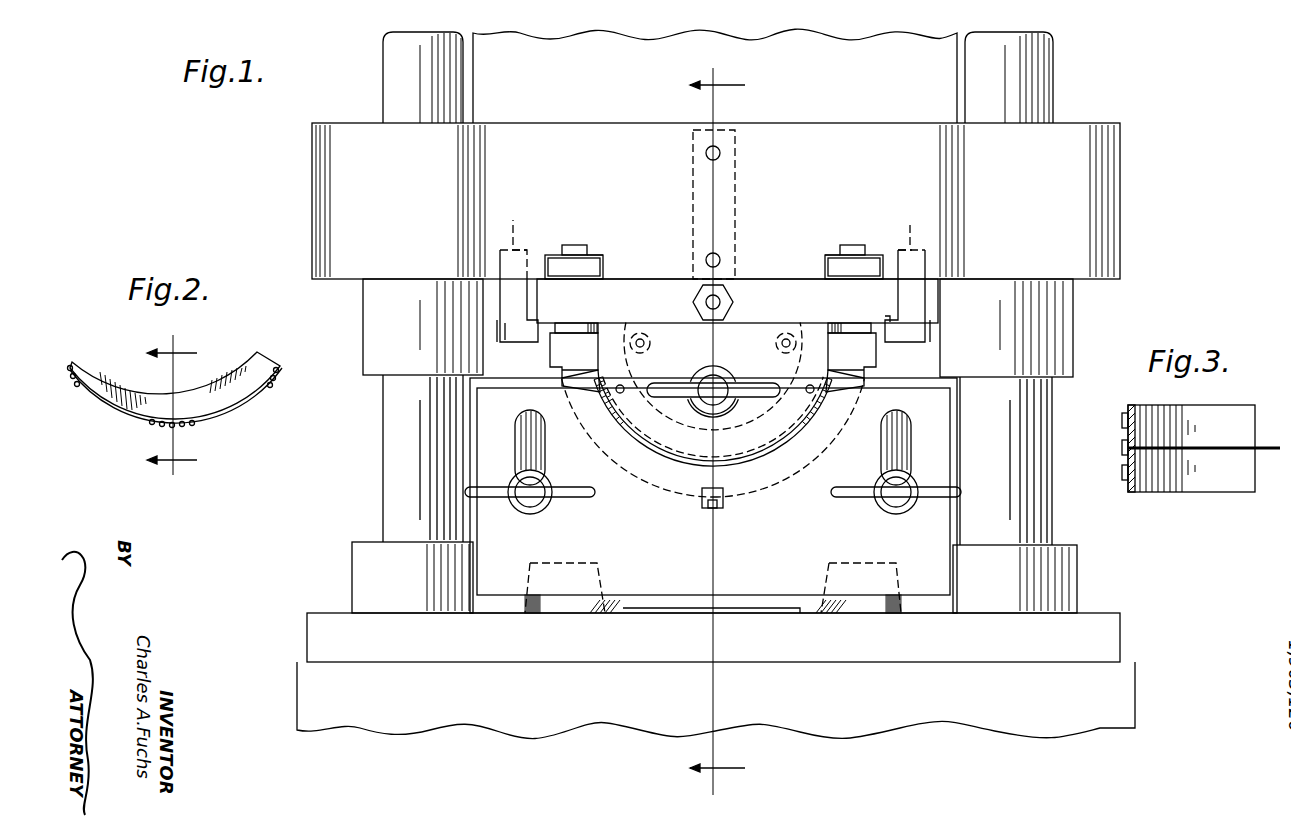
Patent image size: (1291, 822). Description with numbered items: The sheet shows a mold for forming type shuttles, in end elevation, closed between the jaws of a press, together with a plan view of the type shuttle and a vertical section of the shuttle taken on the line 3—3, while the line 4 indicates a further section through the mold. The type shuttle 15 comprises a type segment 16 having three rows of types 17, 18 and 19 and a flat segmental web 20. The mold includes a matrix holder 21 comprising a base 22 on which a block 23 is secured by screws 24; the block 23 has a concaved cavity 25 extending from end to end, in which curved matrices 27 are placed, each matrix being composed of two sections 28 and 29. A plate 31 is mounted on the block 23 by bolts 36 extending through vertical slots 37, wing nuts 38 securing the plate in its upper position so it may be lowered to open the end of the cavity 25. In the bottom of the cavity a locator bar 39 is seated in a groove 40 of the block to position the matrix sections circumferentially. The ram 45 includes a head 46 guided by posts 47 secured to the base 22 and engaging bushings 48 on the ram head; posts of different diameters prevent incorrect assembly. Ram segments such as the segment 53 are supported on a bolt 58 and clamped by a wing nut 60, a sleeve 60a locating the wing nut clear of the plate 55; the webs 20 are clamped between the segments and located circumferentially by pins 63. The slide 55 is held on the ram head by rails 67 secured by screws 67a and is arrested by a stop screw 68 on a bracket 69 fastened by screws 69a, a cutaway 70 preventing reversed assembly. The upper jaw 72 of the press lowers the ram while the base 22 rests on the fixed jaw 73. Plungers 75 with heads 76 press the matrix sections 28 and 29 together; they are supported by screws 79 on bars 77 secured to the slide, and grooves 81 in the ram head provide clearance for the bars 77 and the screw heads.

In FIG. 2, the section line 3- 3 is at (172, 405).
In FIG. 1, the section line 4- 4 is at (717, 428).
In FIG. 2, the type shuttle 15 is at (166, 387).
In FIG. 3, the type shuttle 15 is at (1185, 442).
In FIG. 2, the type segment 16 is at (95, 395).
In FIG. 3, the type segment 16 is at (1132, 492).
In FIG. 2, the row of types 17 is at (200, 428).
In FIG. 3, the row of types 17 is at (1122, 420).
In FIG. 3, the row of types 18 is at (1122, 448).
In FIG. 3, the row of types 19 is at (1122, 474).
In FIG. 1, the flat segmental web 20 is at (636, 432).
In FIG. 2, the flat segmental web 20 is at (94, 360).
In FIG. 3, the flat segmental web 20 is at (1262, 447).
In FIG. 1, the matrix holder 21 is at (472, 445).
In FIG. 1, the base 22 is at (318, 628).
In FIG. 1, the block 23 is at (893, 400).
In FIG. 1, the screws 24 is at (540, 608).
In FIG. 1, the concaved cavity 25 is at (636, 478).
In FIG. 1, the curved matrices 27 is at (545, 380).
In FIG. 1, the matrix section 28 is at (583, 385).
In FIG. 1, the matrix section 29 is at (832, 385).
In FIG. 1, the plate 31 is at (912, 598).
In FIG. 1, the bolts 36 is at (713, 504).
In FIG. 1, the vertical slots 37 is at (518, 446).
In FIG. 1, the wing nuts 38 is at (568, 498).
In FIG. 1, the locator bar 39 is at (709, 518).
In FIG. 1, the groove 40 is at (716, 508).
In FIG. 1, the ram 45 is at (660, 201).
In FIG. 1, the ram head 46 is at (311, 205).
In FIG. 1, the posts 47 is at (397, 84).
In FIG. 1, the bushings 48 is at (373, 328).
In FIG. 1, the ram segment 53 is at (616, 334).
In FIG. 1, the plate 55 is at (664, 291).
In FIG. 1, the bolt 58 is at (704, 385).
In FIG. 1, the wing nut 60 is at (713, 378).
In FIG. 1, the sleeve 60a is at (715, 372).
In FIG. 1, the stops or pins 63 is at (619, 386).
In FIG. 1, the rails 67 is at (503, 278).
In FIG. 1, the screws 67a is at (722, 225).
In FIG. 1, the stop screw 68 is at (736, 300).
In FIG. 1, the bracket 69 is at (720, 204).
In FIG. 1, the screws 69a is at (722, 153).
In FIG. 1, the cutaway 70 is at (888, 316).
In FIG. 1, the upper jaw 72 is at (700, 55).
In FIG. 1, the fixed jaw 73 is at (378, 725).
In FIG. 1, the plungers 75 is at (580, 332).
In FIG. 1, the heads 76 is at (558, 344).
In FIG. 1, the bar 77 is at (560, 274).
In FIG. 1, the screws 79 is at (572, 253).
In FIG. 1, the grooves 81 is at (598, 253).